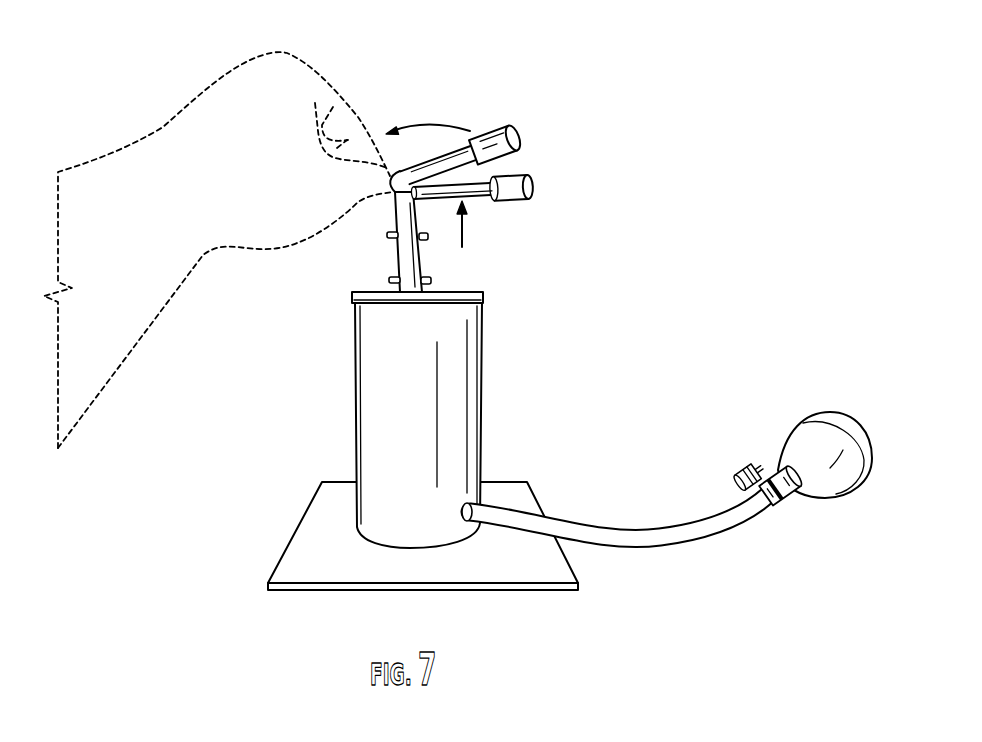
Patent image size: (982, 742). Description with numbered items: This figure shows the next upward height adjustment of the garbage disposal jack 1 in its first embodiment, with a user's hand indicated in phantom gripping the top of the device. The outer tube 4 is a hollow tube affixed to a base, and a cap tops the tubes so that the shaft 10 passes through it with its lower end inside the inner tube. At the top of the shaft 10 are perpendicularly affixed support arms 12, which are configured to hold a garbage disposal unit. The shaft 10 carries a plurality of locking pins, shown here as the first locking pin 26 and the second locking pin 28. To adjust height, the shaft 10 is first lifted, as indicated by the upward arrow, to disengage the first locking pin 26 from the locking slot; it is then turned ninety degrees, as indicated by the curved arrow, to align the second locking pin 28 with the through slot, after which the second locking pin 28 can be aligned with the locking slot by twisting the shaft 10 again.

The garbage disposal jack 1 is at (570, 342).
The outer tube 4 is at (357, 393).
The shaft 10 is at (403, 262).
The support arms 12 is at (513, 181).
The first locking pin 26 is at (390, 235).
The second locking pin 28 is at (430, 278).